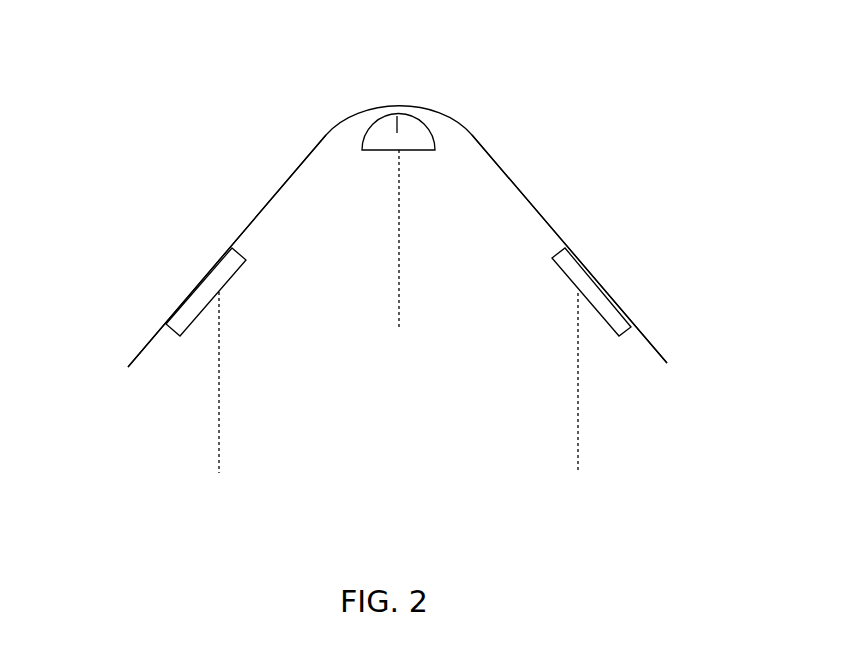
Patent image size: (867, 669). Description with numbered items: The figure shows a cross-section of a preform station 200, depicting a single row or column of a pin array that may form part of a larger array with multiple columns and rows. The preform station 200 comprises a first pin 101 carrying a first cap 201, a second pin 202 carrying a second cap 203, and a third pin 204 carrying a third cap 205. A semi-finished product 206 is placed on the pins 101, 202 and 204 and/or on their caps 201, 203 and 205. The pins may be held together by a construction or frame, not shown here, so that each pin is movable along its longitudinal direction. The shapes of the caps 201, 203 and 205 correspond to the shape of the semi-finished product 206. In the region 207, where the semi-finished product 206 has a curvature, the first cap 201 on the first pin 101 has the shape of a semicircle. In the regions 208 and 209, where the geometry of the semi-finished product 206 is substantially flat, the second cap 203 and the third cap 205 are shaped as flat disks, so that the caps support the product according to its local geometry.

The preform station 200 is at (632, 510).
The first cap 201 is at (405, 107).
The second pin 202 is at (580, 404).
The second cap 203 is at (612, 298).
The third pin 204 is at (221, 367).
The third cap 205 is at (222, 258).
The semi-finished product 206 is at (510, 172).
The region 207 is at (370, 96).
The region 208 is at (607, 235).
The region 209 is at (165, 277).
The first pin 101 is at (400, 255).